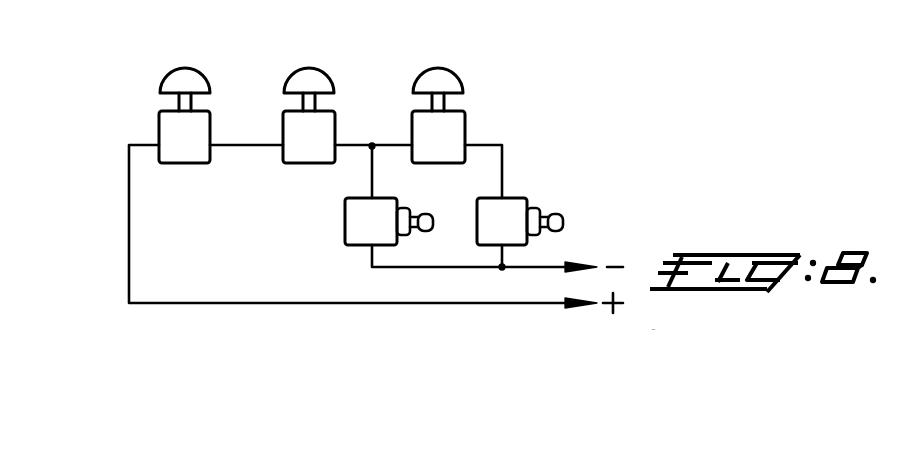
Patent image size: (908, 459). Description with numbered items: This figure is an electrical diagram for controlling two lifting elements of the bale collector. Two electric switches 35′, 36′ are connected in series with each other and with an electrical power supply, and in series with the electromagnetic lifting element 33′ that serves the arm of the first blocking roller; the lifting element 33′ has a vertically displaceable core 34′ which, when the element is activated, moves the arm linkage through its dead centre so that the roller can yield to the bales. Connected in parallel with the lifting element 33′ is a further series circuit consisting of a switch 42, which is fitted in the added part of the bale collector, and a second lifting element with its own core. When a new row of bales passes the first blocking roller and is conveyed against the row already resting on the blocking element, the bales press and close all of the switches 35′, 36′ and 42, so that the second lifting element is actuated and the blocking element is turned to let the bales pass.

The electric switch 35′ is at (171, 128).
The electric switch 36′ is at (297, 150).
The switch 42 is at (455, 133).
The lifting element 33′ is at (357, 222).
The core 34′ is at (471, 178).